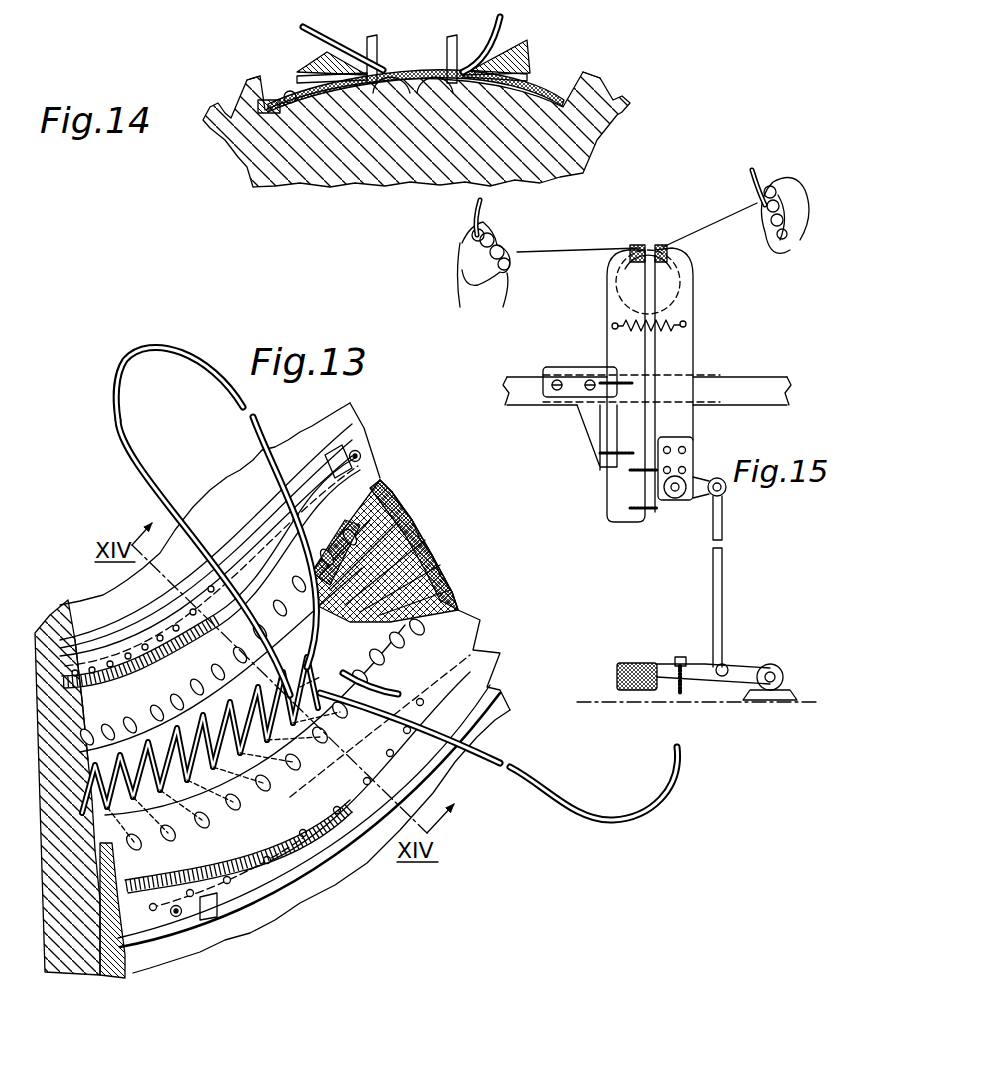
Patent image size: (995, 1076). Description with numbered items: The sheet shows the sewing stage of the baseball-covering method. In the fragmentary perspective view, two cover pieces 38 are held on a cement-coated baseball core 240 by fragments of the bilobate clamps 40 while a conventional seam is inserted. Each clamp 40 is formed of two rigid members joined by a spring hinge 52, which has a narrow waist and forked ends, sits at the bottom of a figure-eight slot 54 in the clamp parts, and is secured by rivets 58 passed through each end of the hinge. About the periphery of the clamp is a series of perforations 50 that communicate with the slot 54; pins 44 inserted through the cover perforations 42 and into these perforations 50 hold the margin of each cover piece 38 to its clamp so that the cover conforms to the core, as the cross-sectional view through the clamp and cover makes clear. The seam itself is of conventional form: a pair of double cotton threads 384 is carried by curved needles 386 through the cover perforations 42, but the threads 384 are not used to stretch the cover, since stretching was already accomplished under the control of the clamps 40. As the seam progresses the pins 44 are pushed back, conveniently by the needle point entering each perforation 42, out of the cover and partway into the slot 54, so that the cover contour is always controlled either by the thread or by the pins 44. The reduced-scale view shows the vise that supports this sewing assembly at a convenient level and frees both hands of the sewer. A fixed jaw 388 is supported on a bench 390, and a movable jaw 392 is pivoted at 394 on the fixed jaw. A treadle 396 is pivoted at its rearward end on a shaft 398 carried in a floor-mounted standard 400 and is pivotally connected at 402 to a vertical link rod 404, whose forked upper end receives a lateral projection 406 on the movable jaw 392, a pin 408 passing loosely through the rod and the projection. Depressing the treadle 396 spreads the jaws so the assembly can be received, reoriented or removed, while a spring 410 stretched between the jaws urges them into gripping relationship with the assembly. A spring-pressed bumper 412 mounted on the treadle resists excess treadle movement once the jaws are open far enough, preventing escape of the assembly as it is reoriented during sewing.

In FIG. 13, the cover piece 38 is at (132, 832).
In FIG. 14, the cover piece 38 is at (590, 140).
In FIG. 13, the bilobate clamp 40 is at (357, 399).
In FIG. 14, the bilobate clamp 40 is at (232, 83).
In FIG. 15, the bilobate clamp 40 is at (639, 246).
In FIG. 13, the cover perforations 42 is at (266, 613).
In FIG. 14, the cover perforations 42 is at (412, 64).
In FIG. 13, the pins 44 is at (380, 497).
In FIG. 13, the perforations 50 is at (185, 705).
In FIG. 14, the perforations 50 is at (302, 55).
In FIG. 13, the spring hinge 52 is at (362, 432).
In FIG. 14, the spring hinge 52 is at (262, 100).
In FIG. 13, the slot 54 is at (63, 655).
In FIG. 14, the slot 54 is at (272, 105).
In FIG. 13, the rivets 58 is at (363, 456).
In FIG. 14, the rivets 58 is at (310, 90).
In FIG. 13, the baseball core 240 is at (423, 548).
In FIG. 14, the baseball core 240 is at (243, 173).
In FIG. 13, the threads 384 is at (195, 352).
In FIG. 14, the threads 384 is at (352, 44).
In FIG. 15, the threads 384 is at (718, 224).
In FIG. 13, the curved needles 386 is at (393, 692).
In FIG. 14, the curved needles 386 is at (482, 48).
In FIG. 15, the curved needles 386 is at (492, 228).
In FIG. 15, the fixed jaw 388 is at (608, 317).
In FIG. 15, the bench 390 is at (728, 405).
In FIG. 15, the movable jaw 392 is at (694, 313).
In FIG. 15, the pivot 394 is at (692, 503).
In FIG. 15, the treadle 396 is at (631, 663).
In FIG. 15, the shaft 398 is at (760, 672).
In FIG. 15, the floor-mounted standard 400 is at (786, 673).
In FIG. 15, the pivotal connection 402 is at (712, 668).
In FIG. 15, the vertical link rod 404 is at (724, 565).
In FIG. 15, the lateral projection 406 is at (712, 478).
In FIG. 15, the pin 408 is at (723, 495).
In FIG. 15, the spring 410 is at (630, 331).
In FIG. 15, the spring-pressed bumper 412 is at (684, 693).